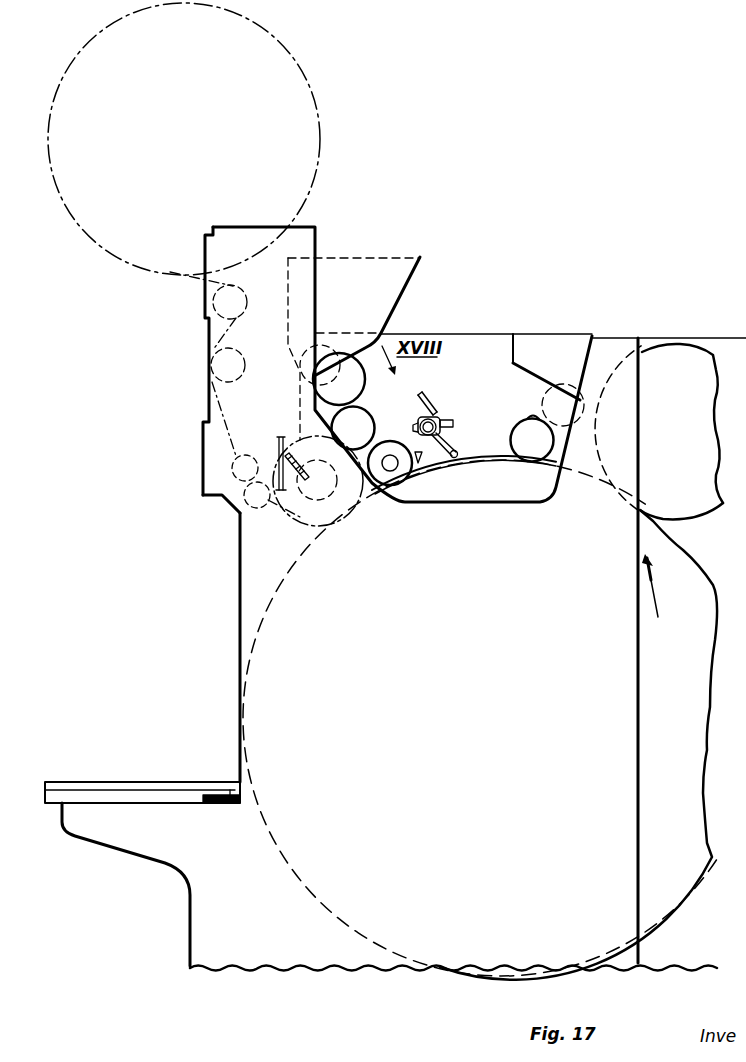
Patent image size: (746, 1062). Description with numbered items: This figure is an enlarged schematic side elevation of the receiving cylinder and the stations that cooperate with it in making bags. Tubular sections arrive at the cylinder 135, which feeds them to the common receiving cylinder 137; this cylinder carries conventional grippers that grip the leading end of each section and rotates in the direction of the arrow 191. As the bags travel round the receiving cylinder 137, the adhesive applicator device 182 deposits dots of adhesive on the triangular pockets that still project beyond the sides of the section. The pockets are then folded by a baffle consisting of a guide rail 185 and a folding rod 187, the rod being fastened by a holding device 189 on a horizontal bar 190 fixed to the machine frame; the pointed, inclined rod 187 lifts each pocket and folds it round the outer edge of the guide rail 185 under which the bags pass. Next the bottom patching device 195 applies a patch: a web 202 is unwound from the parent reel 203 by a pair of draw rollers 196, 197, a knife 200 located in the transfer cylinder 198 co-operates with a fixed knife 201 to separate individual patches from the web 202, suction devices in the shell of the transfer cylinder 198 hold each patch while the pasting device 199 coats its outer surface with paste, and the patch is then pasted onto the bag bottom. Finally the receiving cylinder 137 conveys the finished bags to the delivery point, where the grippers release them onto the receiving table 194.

The cylinder 135 is at (663, 365).
The receiving cylinder 137 is at (683, 575).
The adhesive applicator device 182 is at (556, 447).
The guide rail 185 is at (490, 453).
The folding rod 187 is at (463, 465).
The holding device 189 is at (437, 417).
The horizontal bar 190 is at (428, 437).
The arrow 191 is at (662, 599).
The receiving table 194 is at (152, 782).
The bottom patching device 195 is at (283, 405).
The draw roller 196 is at (240, 470).
The draw roller 197 is at (231, 508).
The transfer cylinder 198 is at (313, 493).
The pasting device 199 is at (364, 400).
The knife 200 is at (278, 492).
The fixed knife 201 is at (280, 442).
The web 202 is at (225, 423).
The parent reel 203 is at (113, 235).